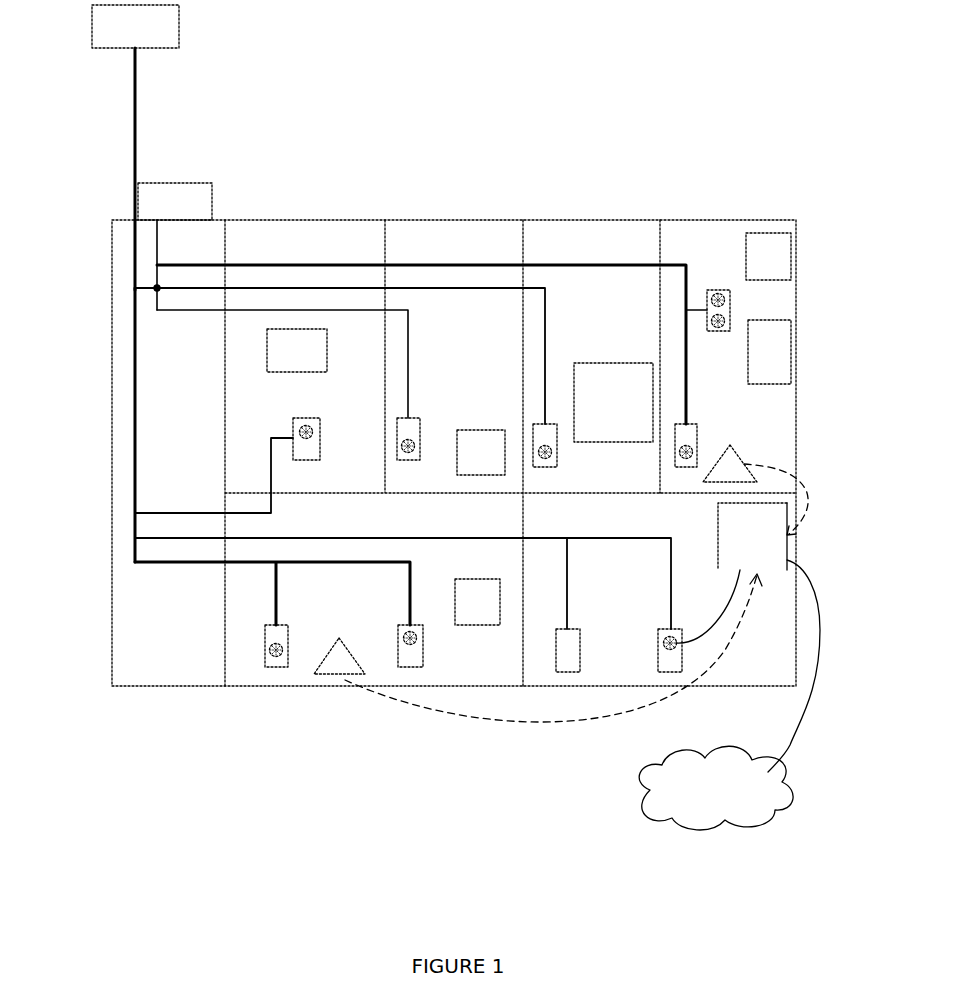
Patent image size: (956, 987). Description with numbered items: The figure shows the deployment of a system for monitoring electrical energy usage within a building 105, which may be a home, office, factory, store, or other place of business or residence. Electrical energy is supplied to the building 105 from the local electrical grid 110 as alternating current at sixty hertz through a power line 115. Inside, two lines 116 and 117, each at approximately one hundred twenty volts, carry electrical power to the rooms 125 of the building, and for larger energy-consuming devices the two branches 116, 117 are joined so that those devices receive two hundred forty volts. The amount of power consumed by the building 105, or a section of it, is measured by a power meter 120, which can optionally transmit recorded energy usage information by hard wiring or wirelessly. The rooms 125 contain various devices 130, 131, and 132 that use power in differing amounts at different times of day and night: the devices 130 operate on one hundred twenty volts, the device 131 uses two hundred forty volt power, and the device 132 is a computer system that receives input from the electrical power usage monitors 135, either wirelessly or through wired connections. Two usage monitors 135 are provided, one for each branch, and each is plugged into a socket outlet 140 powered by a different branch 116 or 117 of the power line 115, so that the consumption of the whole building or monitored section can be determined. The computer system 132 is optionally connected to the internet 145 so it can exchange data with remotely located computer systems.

The building 105 is at (636, 198).
The local electrical grid 110 is at (135, 26).
The power line 115 is at (137, 130).
The line (first branch) 116 is at (133, 390).
The line (second branch) 117 is at (157, 246).
The power meter 120 is at (175, 201).
The rooms 125 is at (304, 232).
The electricity-consuming devices 130 is at (746, 252).
The electricity-consuming device 131 is at (614, 442).
The computer system 132 is at (739, 637).
The electrical power usage monitors 135 is at (280, 651).
The socket outlets 140 is at (265, 666).
The internet 145 is at (635, 797).